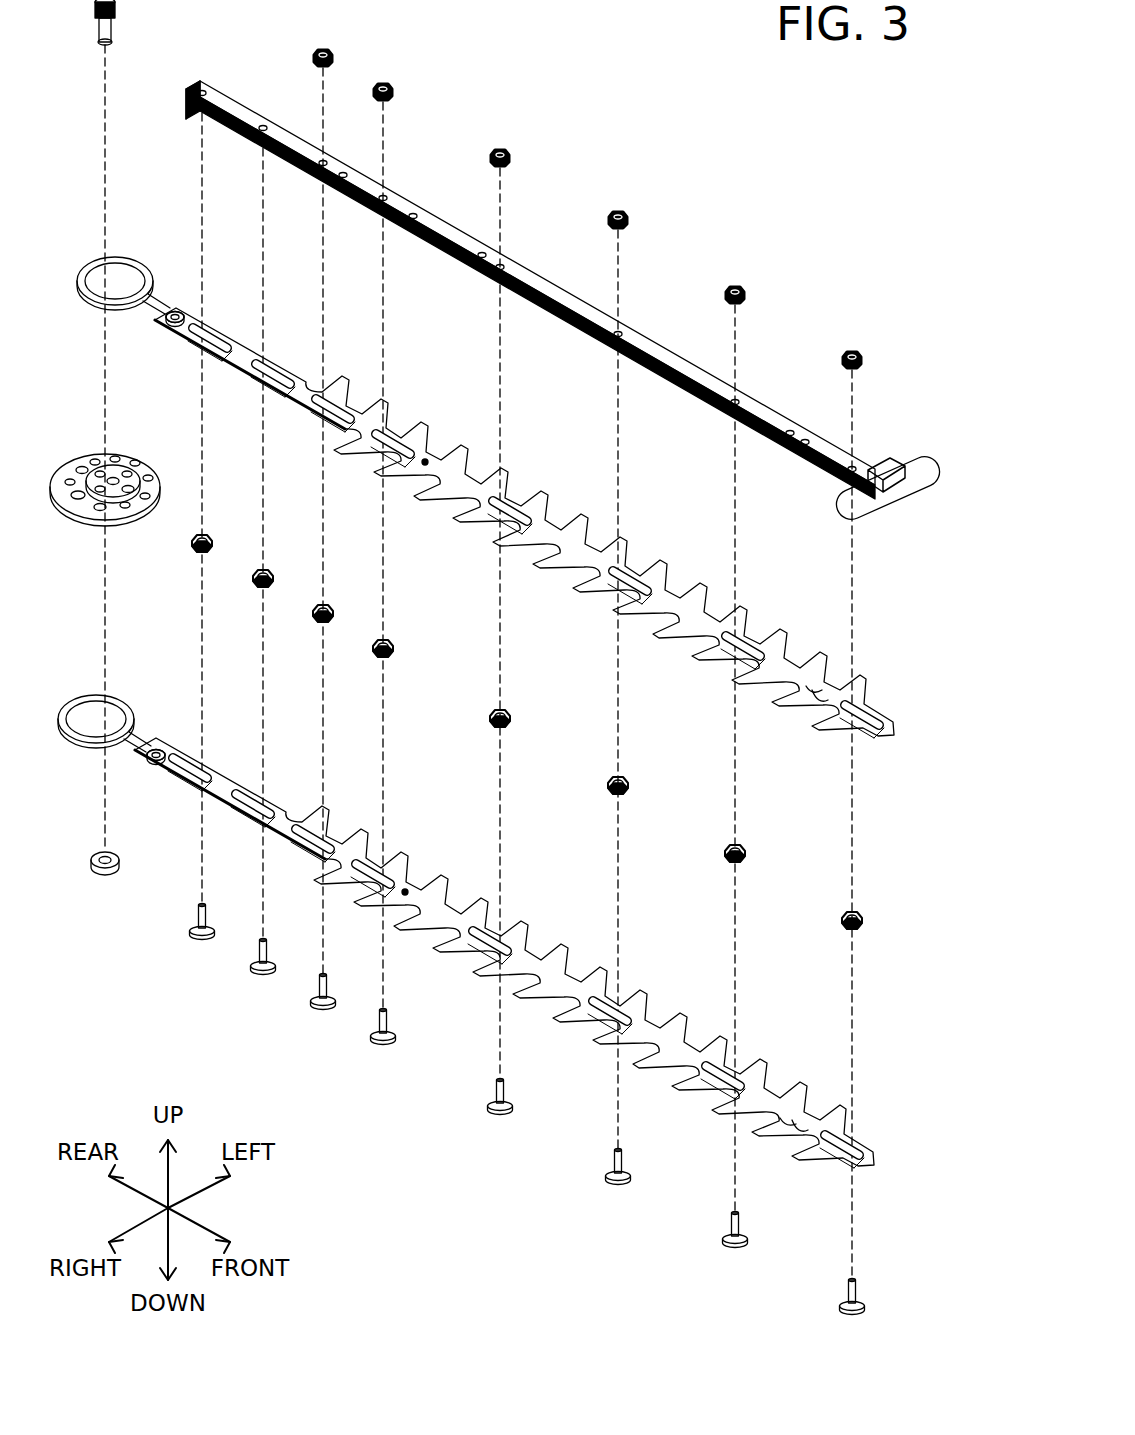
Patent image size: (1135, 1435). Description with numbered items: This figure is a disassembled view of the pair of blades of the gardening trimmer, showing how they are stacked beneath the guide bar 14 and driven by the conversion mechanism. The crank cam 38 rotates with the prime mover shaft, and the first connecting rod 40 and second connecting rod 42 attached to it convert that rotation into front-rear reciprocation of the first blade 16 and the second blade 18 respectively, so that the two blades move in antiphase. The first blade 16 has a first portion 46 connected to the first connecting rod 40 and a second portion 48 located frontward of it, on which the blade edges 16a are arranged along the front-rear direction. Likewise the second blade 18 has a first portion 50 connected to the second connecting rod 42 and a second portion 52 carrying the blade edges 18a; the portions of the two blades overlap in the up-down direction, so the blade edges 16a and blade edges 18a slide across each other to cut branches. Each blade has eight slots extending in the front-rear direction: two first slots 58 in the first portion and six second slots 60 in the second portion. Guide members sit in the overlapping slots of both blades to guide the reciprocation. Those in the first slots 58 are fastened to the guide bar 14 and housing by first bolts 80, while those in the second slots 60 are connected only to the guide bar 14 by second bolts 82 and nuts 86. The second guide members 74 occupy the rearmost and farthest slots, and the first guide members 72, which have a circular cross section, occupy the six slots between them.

The guide bar 14 is at (232, 105).
The first blade 16 is at (895, 712).
The blade edges 16a is at (835, 680).
The second blade 18 is at (890, 1135).
The blade edges 18a is at (832, 1110).
The crank cam 38 is at (88, 465).
The first connecting rod 40 is at (122, 258).
The second connecting rod 42 is at (106, 700).
The first portion 46 is at (170, 326).
The second portion 48 is at (812, 695).
The first portion 50 is at (152, 762).
The second portion 52 is at (790, 1130).
The first slot 58 is at (256, 798).
The second slot 60 is at (845, 1140).
The first guide members 72 is at (795, 848).
The second guide members 74 is at (905, 912).
The first bolts 80 is at (264, 978).
The second bolts 82 is at (840, 1310).
The nuts 86 is at (850, 355).